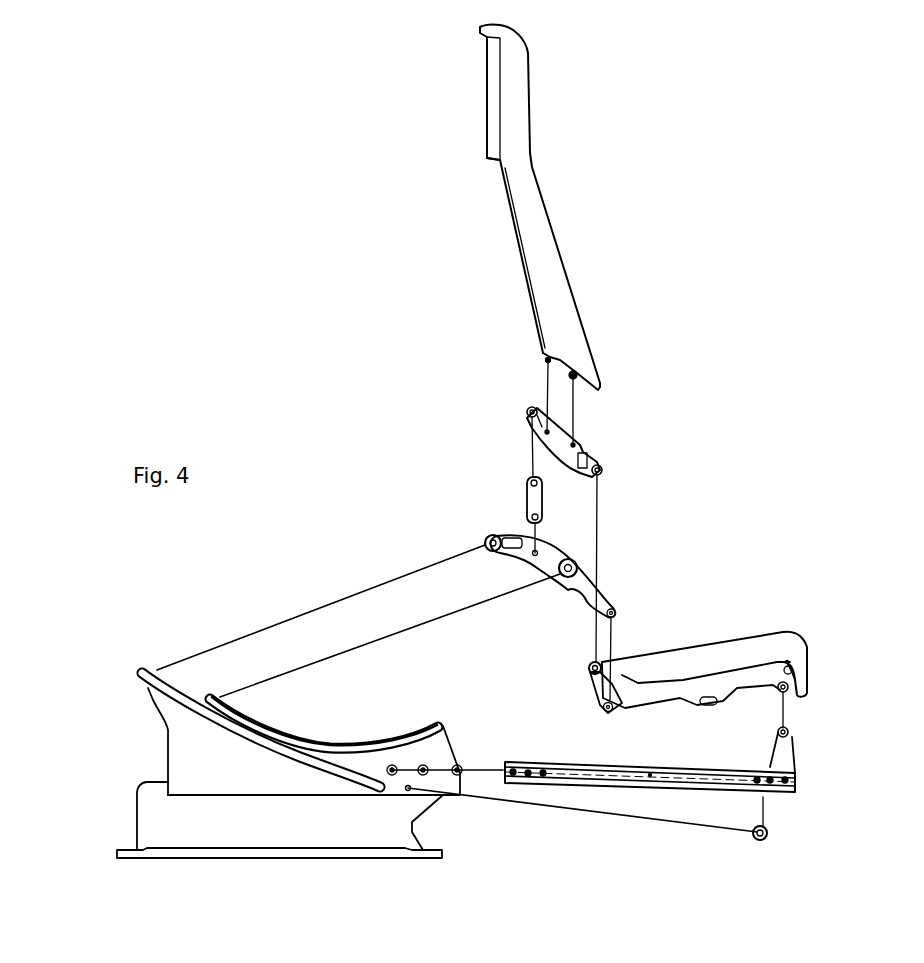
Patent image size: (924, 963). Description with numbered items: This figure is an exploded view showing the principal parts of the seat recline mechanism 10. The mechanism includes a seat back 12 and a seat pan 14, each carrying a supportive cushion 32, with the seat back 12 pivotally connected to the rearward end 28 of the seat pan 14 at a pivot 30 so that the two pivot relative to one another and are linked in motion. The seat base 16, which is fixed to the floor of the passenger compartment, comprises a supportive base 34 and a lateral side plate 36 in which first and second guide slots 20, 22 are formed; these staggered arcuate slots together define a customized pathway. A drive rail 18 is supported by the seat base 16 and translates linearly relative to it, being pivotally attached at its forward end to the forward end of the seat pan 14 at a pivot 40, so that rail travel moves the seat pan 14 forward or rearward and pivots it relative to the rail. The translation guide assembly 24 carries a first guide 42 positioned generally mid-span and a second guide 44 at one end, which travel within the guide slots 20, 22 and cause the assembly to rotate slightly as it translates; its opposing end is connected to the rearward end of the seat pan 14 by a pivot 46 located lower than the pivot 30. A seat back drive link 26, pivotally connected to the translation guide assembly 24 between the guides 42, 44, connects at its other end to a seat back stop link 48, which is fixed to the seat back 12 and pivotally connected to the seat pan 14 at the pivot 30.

The seat recline mechanism 10 is at (855, 242).
The seat back 12 is at (522, 265).
The seat pan 14 is at (722, 680).
The seat base 16 is at (168, 758).
The drive rail 18 is at (680, 780).
The first guide slot 20 is at (333, 750).
The second guide slot 22 is at (147, 690).
The translation guide assembly 24 is at (550, 545).
The seat back drive link 26 is at (530, 500).
The rearward end 28 is at (636, 638).
The pivot 30 is at (590, 665).
The supportive cushion 32 is at (515, 100).
The supportive base 34 is at (162, 827).
The lateral side plate 36 is at (187, 767).
The pivot 40 is at (790, 733).
The first guide 42 is at (580, 565).
The second guide 44 is at (488, 537).
The pivot 46 is at (604, 710).
The seat back stop link 48 is at (565, 440).